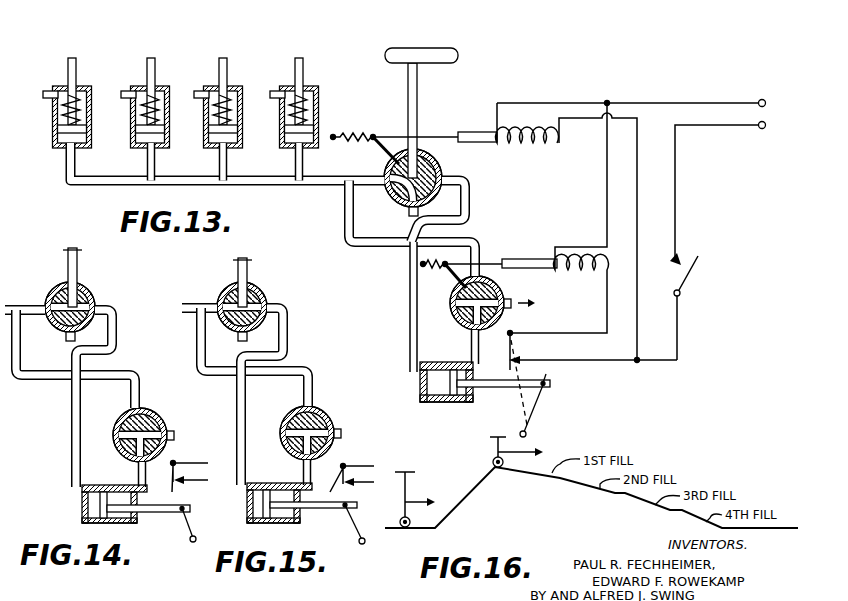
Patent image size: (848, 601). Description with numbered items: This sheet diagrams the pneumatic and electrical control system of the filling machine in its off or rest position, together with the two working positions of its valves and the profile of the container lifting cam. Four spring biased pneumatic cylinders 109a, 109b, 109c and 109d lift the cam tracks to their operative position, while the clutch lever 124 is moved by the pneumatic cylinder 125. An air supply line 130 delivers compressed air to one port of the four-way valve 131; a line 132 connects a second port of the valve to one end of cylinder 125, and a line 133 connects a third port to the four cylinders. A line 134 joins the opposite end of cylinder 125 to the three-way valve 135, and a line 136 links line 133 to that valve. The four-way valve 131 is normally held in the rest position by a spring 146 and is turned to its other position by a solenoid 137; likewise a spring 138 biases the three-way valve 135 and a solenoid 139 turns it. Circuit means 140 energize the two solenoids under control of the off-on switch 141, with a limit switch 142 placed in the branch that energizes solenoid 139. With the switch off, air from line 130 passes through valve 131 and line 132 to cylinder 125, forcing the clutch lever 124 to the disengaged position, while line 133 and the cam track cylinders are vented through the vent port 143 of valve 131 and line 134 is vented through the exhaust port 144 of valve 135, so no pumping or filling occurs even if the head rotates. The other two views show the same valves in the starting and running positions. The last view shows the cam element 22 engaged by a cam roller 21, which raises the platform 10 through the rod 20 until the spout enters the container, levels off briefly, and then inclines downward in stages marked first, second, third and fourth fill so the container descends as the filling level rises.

In FIG. 13, the spring biased pneumatic cylinder 109a is at (310, 86).
In FIG. 13, the spring biased pneumatic cylinder 109b is at (233, 86).
In FIG. 13, the spring biased pneumatic cylinder 109c is at (160, 86).
In FIG. 13, the spring biased pneumatic cylinder 109d is at (82, 86).
In FIG. 13, the air supply line 130 is at (440, 50).
In FIG. 14, the air supply line 130 is at (80, 255).
In FIG. 15, the air supply line 130 is at (246, 262).
In FIG. 13, the four-way valve 131 is at (445, 168).
In FIG. 14, the four-way valve 131 is at (92, 290).
In FIG. 15, the four-way valve 131 is at (266, 293).
In FIG. 13, the line 133 is at (270, 186).
In FIG. 14, the line 133 is at (6, 312).
In FIG. 15, the line 133 is at (183, 308).
In FIG. 13, the line 136 is at (348, 248).
In FIG. 14, the line 136 is at (118, 375).
In FIG. 15, the line 136 is at (290, 370).
In FIG. 13, the line 132 is at (407, 299).
In FIG. 14, the line 132 is at (72, 434).
In FIG. 15, the line 132 is at (285, 333).
In FIG. 13, the line 134 is at (473, 345).
In FIG. 14, the line 134 is at (137, 472).
In FIG. 15, the line 134 is at (308, 467).
In FIG. 13, the three-way valve 135 is at (505, 315).
In FIG. 14, the three-way valve 135 is at (155, 410).
In FIG. 15, the three-way valve 135 is at (300, 408).
In FIG. 13, the solenoid 137 is at (490, 131).
In FIG. 13, the spring 138 is at (459, 282).
In FIG. 13, the solenoid 139 is at (525, 259).
In FIG. 13, the circuit means 140 is at (675, 204).
In FIG. 13, the off-on switch 141 is at (682, 289).
In FIG. 13, the limit switch 142 is at (528, 340).
In FIG. 14, the limit switch 142 is at (175, 463).
In FIG. 15, the limit switch 142 is at (336, 464).
In FIG. 13, the vent port 143 is at (406, 212).
In FIG. 14, the vent port 143 is at (73, 342).
In FIG. 15, the vent port 143 is at (243, 342).
In FIG. 13, the exhaust port 144 is at (516, 298).
In FIG. 14, the exhaust port 144 is at (175, 434).
In FIG. 15, the exhaust port 144 is at (340, 428).
In FIG. 13, the spring 146 is at (343, 136).
In FIG. 13, the clutch lever 124 is at (549, 386).
In FIG. 14, the clutch lever 124 is at (182, 516).
In FIG. 15, the clutch lever 124 is at (357, 512).
In FIG. 13, the pneumatic cylinder 125 is at (447, 405).
In FIG. 14, the pneumatic cylinder 125 is at (82, 508).
In FIG. 15, the pneumatic cylinder 125 is at (262, 525).
In FIG. 16, the platform 10 is at (409, 470).
In FIG. 16, the rod 20 is at (408, 496).
In FIG. 16, the cam roller 21 is at (490, 456).
In FIG. 16, the cam element 22 is at (448, 509).